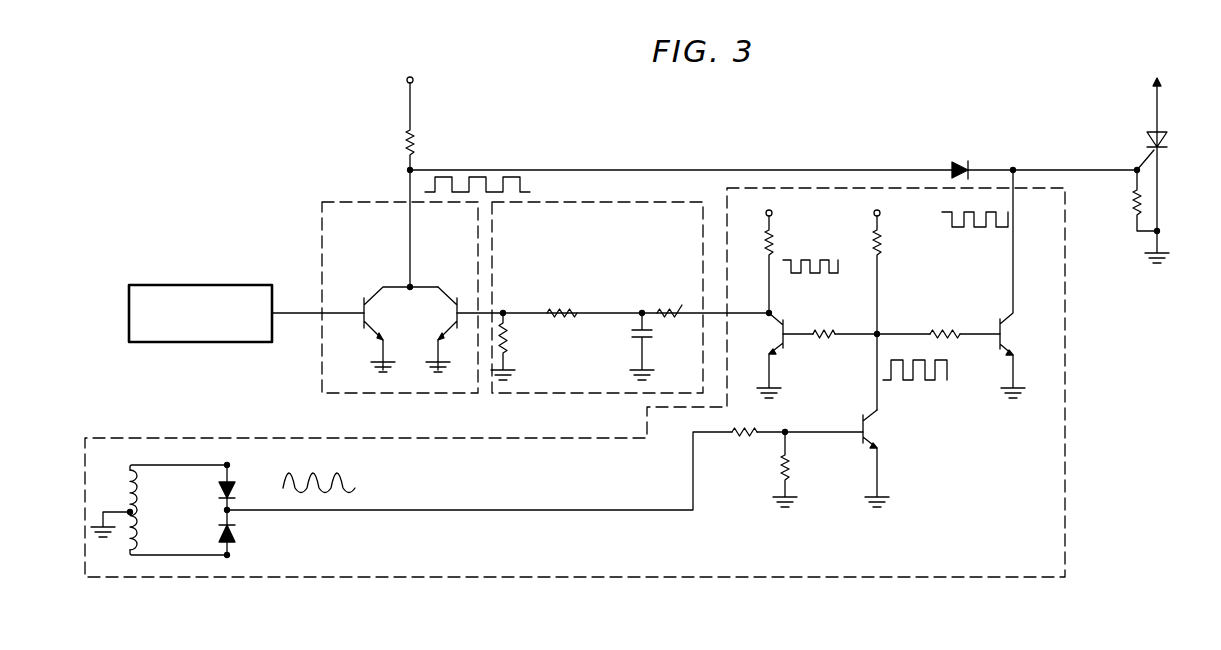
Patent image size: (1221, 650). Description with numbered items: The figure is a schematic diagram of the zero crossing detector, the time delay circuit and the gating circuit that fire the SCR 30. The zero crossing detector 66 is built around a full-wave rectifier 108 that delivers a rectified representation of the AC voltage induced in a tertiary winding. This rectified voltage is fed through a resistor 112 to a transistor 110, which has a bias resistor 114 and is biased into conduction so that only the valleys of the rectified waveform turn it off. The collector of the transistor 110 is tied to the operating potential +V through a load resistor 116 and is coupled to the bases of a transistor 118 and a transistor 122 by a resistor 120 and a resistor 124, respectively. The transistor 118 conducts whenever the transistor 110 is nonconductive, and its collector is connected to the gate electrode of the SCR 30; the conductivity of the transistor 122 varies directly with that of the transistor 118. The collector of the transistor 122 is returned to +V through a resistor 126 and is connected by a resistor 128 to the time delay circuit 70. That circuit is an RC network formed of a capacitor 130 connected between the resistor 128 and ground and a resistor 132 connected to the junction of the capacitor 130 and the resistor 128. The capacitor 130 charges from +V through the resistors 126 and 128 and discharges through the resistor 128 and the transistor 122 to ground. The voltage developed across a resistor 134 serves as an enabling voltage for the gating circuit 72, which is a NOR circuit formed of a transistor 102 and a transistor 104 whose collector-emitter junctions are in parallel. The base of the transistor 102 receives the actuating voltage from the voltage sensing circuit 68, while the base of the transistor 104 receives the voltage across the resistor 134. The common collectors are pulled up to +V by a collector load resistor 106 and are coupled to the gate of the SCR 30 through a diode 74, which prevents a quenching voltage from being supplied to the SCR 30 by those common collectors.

The SCR 30 is at (1146, 138).
The zero crossing detector 66 is at (1065, 362).
The voltage sensing circuit 68 is at (189, 285).
The time delay circuit 70 is at (545, 395).
The gating circuit 72 is at (330, 202).
The diode 74 is at (960, 160).
The transistor 102 is at (378, 287).
The transistor 104 is at (438, 287).
The collector load resistor 106 is at (414, 140).
The full-wave rectifier 108 is at (190, 520).
The transistor 110 is at (878, 417).
The resistor 112 is at (749, 437).
The bias resistor 114 is at (792, 468).
The load resistor 116 is at (880, 246).
The transistor 118 is at (1010, 321).
The resistor 120 is at (943, 332).
The transistor 122 is at (785, 315).
The resistor 124 is at (832, 322).
The resistor 126 is at (773, 243).
The resistor 128 is at (667, 308).
The capacitor 130 is at (633, 334).
The resistor 132 is at (563, 309).
The resistor 134 is at (507, 338).